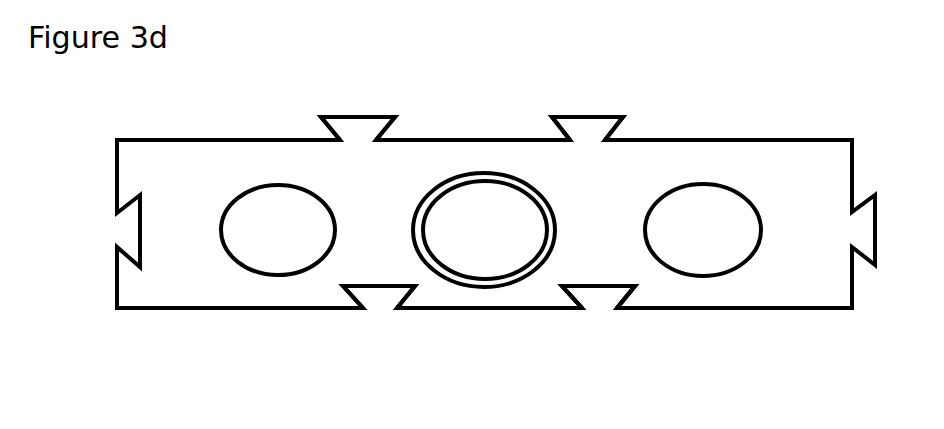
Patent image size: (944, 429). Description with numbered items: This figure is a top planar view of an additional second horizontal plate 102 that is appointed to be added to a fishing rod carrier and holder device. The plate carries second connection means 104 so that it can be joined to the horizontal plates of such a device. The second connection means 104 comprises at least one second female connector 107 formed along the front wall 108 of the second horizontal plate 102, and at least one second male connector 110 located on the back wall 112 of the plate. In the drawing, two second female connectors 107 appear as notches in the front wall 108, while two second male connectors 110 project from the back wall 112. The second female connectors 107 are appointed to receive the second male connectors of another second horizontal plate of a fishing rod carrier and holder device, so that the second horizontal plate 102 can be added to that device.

The second horizontal plate 102 is at (793, 291).
The second connection means 104 is at (617, 306).
The second female connector 107 is at (380, 298).
The front wall 108 is at (486, 312).
The second male connector 110 is at (384, 121).
The back wall 112 is at (748, 142).